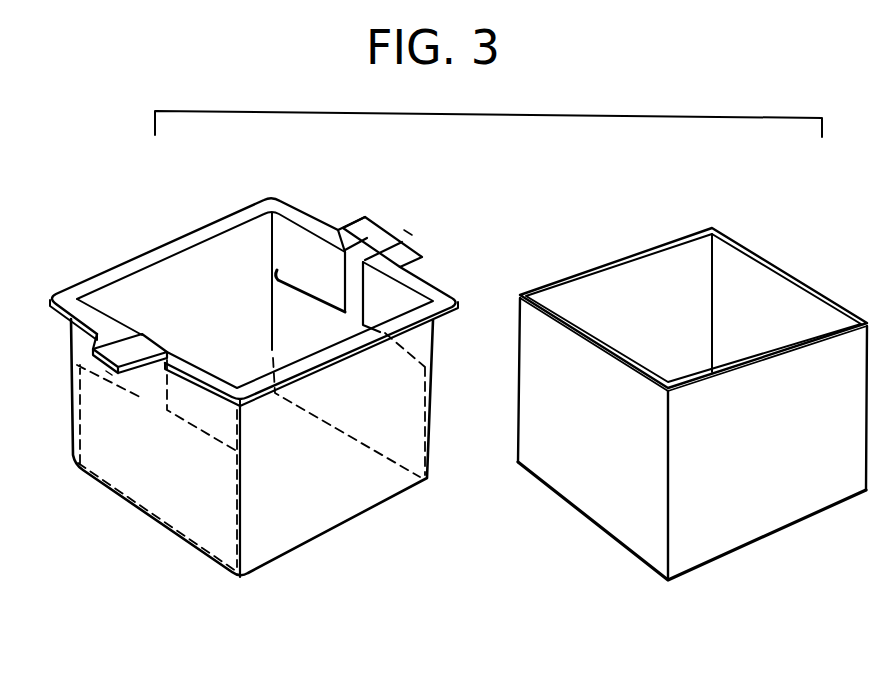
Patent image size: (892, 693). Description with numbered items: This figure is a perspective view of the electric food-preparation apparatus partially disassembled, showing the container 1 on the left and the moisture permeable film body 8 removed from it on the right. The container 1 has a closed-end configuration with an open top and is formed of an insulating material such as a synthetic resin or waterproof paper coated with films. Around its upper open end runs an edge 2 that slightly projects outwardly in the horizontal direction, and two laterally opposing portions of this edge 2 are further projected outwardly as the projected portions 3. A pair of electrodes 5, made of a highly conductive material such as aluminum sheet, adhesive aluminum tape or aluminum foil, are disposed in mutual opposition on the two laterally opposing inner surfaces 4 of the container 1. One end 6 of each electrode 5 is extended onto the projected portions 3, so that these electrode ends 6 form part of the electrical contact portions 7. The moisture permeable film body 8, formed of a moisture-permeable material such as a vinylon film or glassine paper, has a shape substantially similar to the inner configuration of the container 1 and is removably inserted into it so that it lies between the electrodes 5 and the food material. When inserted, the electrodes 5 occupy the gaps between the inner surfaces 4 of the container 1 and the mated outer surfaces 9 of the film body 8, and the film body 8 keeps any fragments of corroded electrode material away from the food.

The container 1 is at (437, 362).
The edge 2 is at (170, 245).
The projected portions 3 is at (90, 284).
The inner surfaces 4 is at (192, 362).
The electrode 5 is at (300, 322).
The electrode end 6 is at (112, 347).
The electrical contact portions 7 is at (110, 373).
The moisture permeable film body 8 is at (767, 290).
The outer surfaces 9 is at (835, 302).